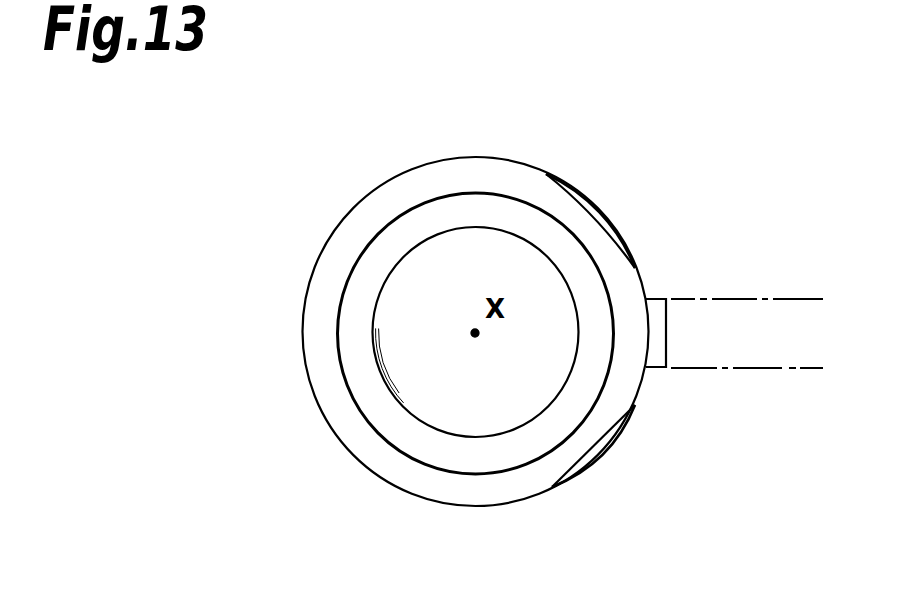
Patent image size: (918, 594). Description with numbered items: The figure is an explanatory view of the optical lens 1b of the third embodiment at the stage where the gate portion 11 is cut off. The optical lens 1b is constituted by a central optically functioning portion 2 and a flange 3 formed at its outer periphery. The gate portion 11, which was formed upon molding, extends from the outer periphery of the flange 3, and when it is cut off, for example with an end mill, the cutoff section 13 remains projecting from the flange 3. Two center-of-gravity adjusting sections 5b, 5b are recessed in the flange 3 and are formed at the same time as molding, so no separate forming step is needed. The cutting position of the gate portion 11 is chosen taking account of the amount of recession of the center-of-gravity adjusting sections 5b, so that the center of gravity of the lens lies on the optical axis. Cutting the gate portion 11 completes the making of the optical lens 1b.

The optical lens 1b is at (647, 173).
The optically functioning portion 2 is at (430, 389).
The flange 3 is at (350, 240).
The center-of-gravity adjusting sections 5b is at (595, 215).
The gate portion 11 is at (763, 372).
The cutoff section 13 is at (655, 302).